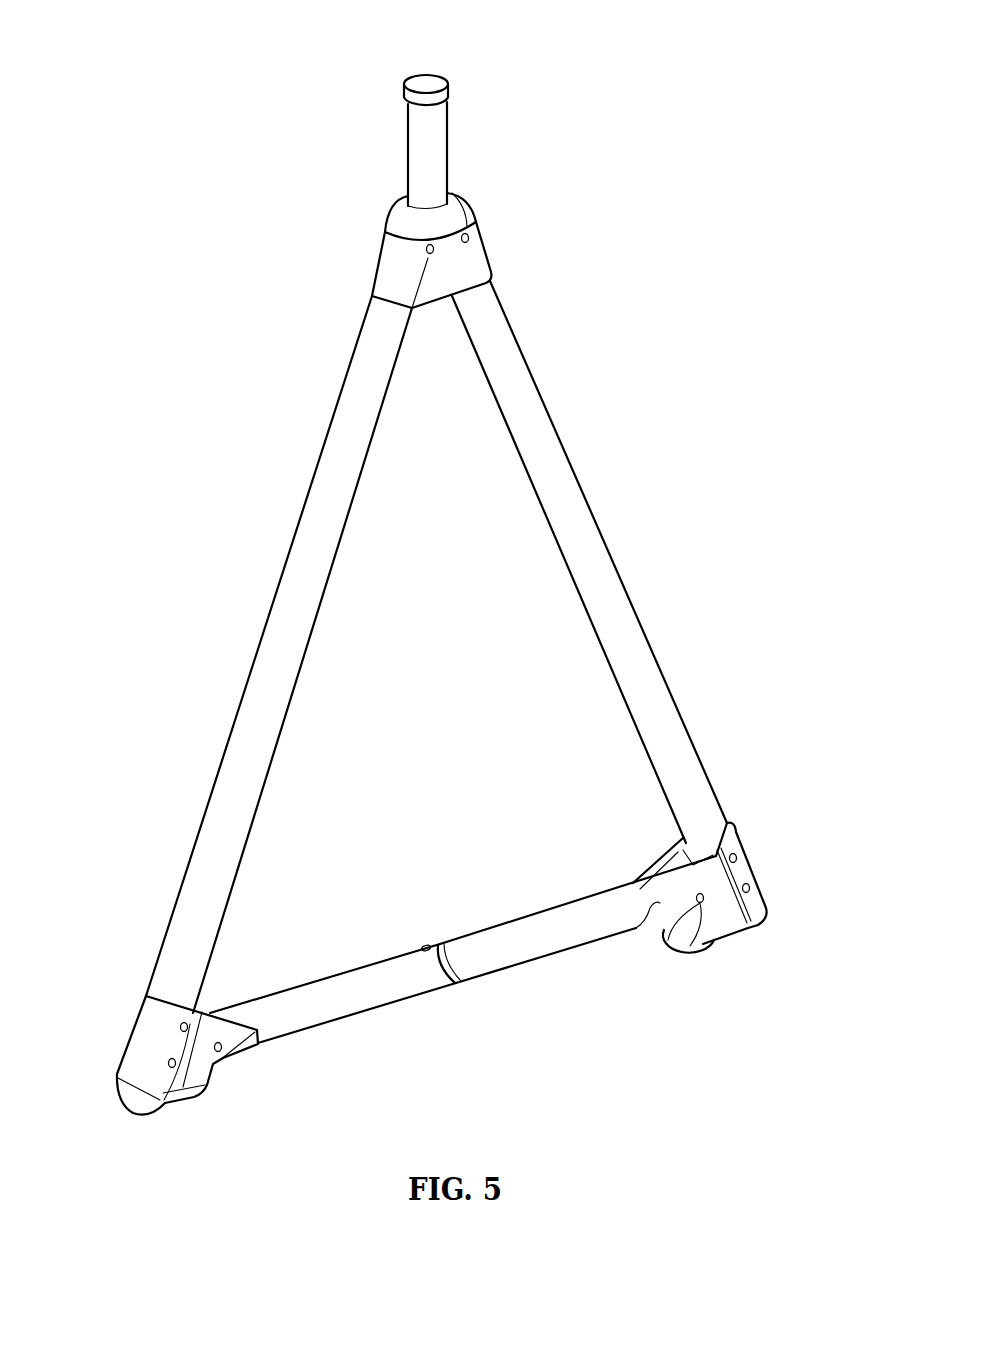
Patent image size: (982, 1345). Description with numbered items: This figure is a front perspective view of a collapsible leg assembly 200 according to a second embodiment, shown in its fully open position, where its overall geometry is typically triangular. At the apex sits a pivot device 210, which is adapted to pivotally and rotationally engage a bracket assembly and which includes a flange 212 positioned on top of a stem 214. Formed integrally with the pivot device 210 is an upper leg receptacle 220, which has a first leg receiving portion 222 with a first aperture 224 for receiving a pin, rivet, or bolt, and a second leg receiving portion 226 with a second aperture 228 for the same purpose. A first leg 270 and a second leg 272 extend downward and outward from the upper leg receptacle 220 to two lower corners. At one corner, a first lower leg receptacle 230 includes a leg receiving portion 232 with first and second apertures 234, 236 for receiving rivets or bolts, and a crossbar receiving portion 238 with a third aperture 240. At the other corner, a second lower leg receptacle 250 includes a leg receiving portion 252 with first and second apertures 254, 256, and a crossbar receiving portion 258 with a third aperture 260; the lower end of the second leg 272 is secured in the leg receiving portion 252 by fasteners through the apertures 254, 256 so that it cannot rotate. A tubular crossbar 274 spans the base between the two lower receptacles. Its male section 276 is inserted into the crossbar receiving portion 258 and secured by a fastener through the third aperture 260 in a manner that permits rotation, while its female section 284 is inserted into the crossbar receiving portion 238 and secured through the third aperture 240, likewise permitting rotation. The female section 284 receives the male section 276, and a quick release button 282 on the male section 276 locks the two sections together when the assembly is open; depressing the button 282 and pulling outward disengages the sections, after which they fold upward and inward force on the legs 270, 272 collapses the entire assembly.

The collapsible leg assembly 200 is at (243, 155).
The pivot device 210 is at (488, 153).
The flange 212 is at (448, 92).
The stem 214 is at (407, 153).
The upper leg receptacle 220 is at (473, 202).
The first leg receiving portion 222 is at (377, 262).
The first aperture 224 is at (427, 252).
The second leg receiving portion 226 is at (493, 268).
The second aperture 228 is at (469, 238).
The first lower leg receptacle 230 is at (123, 1050).
The leg receiving portion 232 is at (135, 1012).
The first aperture 234 is at (188, 1024).
The second aperture 236 is at (173, 1068).
The crossbar receiving portion 238 is at (245, 1054).
The third aperture 240 is at (219, 1052).
The second lower leg receptacle 250 is at (762, 920).
The leg receiving portion 252 is at (737, 857).
The first aperture 254 is at (734, 830).
The second aperture 256 is at (750, 888).
The crossbar receiving portion 258 is at (727, 931).
The third aperture 260 is at (700, 903).
The first leg 270 is at (278, 585).
The second leg 272 is at (595, 523).
The tubular crossbar 274 is at (505, 902).
The male section 276 is at (515, 965).
The quick release button 282 is at (425, 944).
The female section 284 is at (368, 1010).